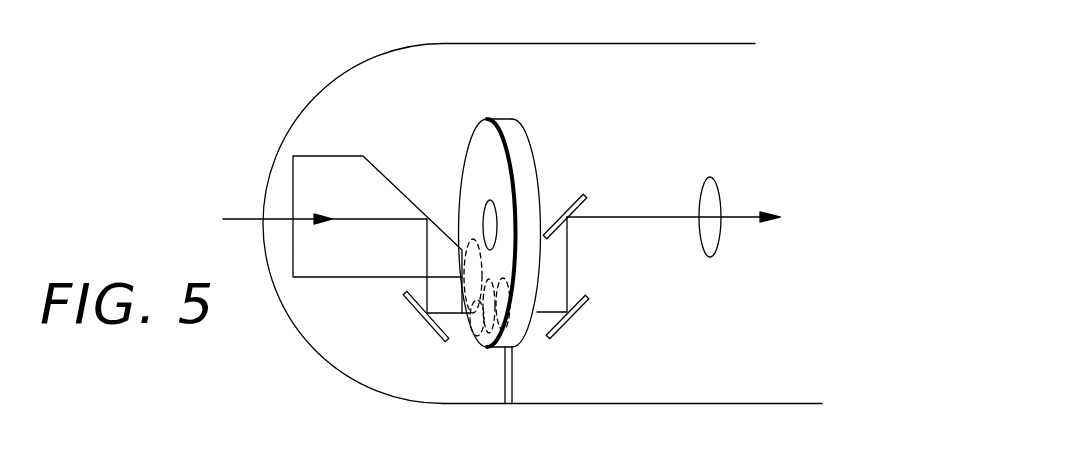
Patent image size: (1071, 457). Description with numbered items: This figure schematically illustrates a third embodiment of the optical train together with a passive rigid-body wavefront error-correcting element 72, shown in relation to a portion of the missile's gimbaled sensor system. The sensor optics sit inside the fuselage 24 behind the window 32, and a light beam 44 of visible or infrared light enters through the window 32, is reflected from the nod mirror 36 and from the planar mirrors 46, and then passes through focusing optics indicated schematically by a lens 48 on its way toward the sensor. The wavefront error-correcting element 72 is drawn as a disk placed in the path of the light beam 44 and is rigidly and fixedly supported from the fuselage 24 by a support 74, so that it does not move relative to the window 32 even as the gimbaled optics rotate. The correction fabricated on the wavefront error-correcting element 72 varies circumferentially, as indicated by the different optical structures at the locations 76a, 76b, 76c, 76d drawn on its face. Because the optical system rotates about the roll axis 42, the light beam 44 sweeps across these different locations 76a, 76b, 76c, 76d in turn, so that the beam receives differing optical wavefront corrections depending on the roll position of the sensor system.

The fuselage 24 is at (528, 43).
The window 32 is at (286, 127).
The nod mirror 36 is at (392, 175).
The roll axis 42 is at (344, 218).
The light beam 44 is at (235, 218).
The planar mirrors 46 is at (583, 198).
The lens 48 is at (735, 161).
The wavefront error-correcting element 72 is at (498, 118).
The support 74 is at (514, 391).
The location 76a is at (460, 247).
The location 76b is at (468, 323).
The location 76c is at (475, 342).
The location 76d is at (517, 343).